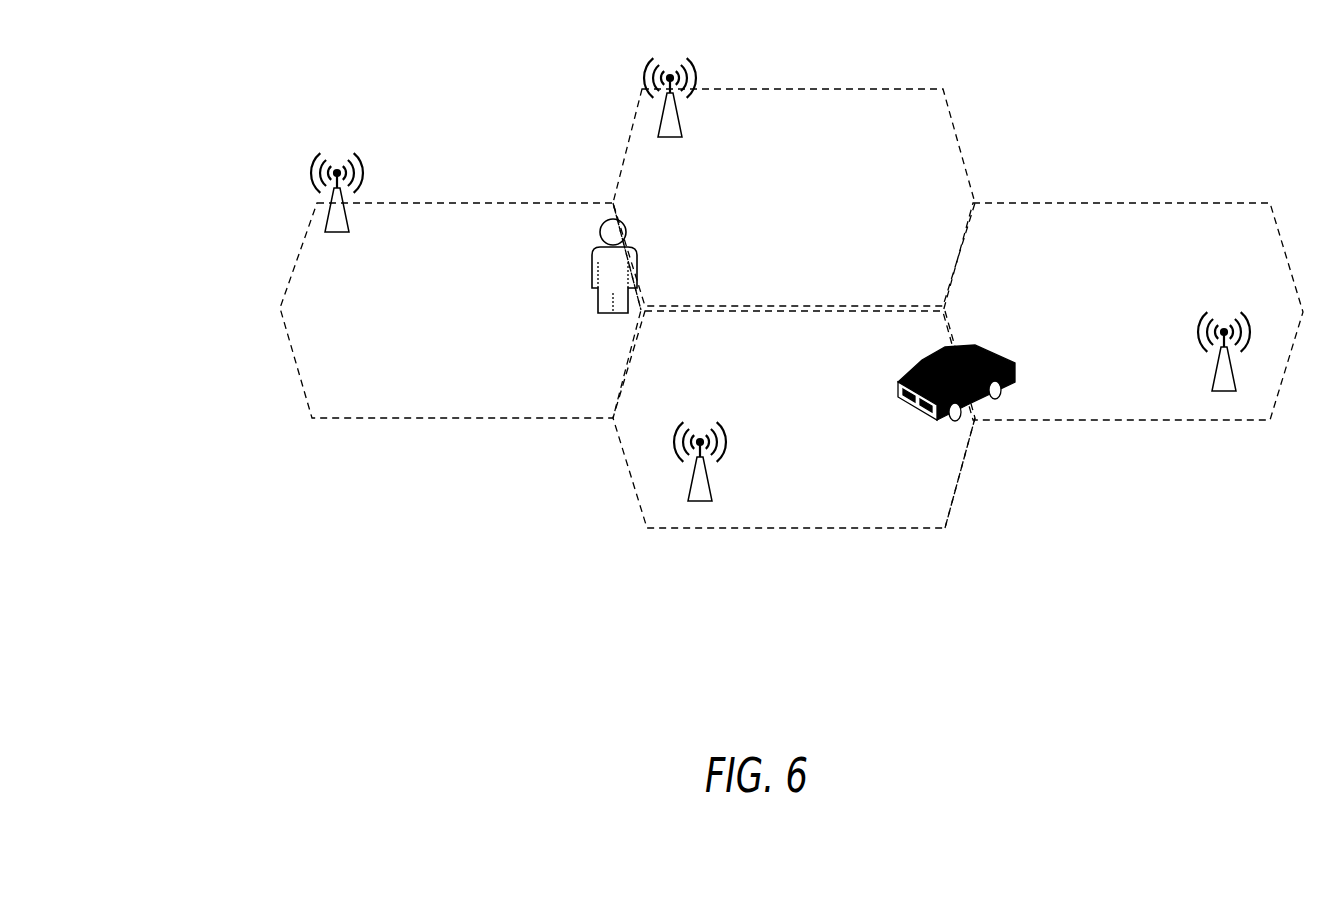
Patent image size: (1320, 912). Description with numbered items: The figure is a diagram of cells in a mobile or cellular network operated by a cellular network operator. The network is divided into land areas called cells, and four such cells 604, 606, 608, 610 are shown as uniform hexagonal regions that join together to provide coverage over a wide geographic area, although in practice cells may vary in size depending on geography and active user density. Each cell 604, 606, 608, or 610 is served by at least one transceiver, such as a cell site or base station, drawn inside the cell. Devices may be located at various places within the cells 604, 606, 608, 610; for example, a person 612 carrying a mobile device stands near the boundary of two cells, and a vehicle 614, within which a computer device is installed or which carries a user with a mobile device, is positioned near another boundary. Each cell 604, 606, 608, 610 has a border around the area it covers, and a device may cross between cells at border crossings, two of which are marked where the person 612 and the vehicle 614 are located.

The cell 604 is at (460, 310).
The cell 606 is at (794, 419).
The cell 608 is at (794, 197).
The cell 610 is at (1123, 311).
The person 612 is at (584, 275).
The vehicle 614 is at (896, 402).